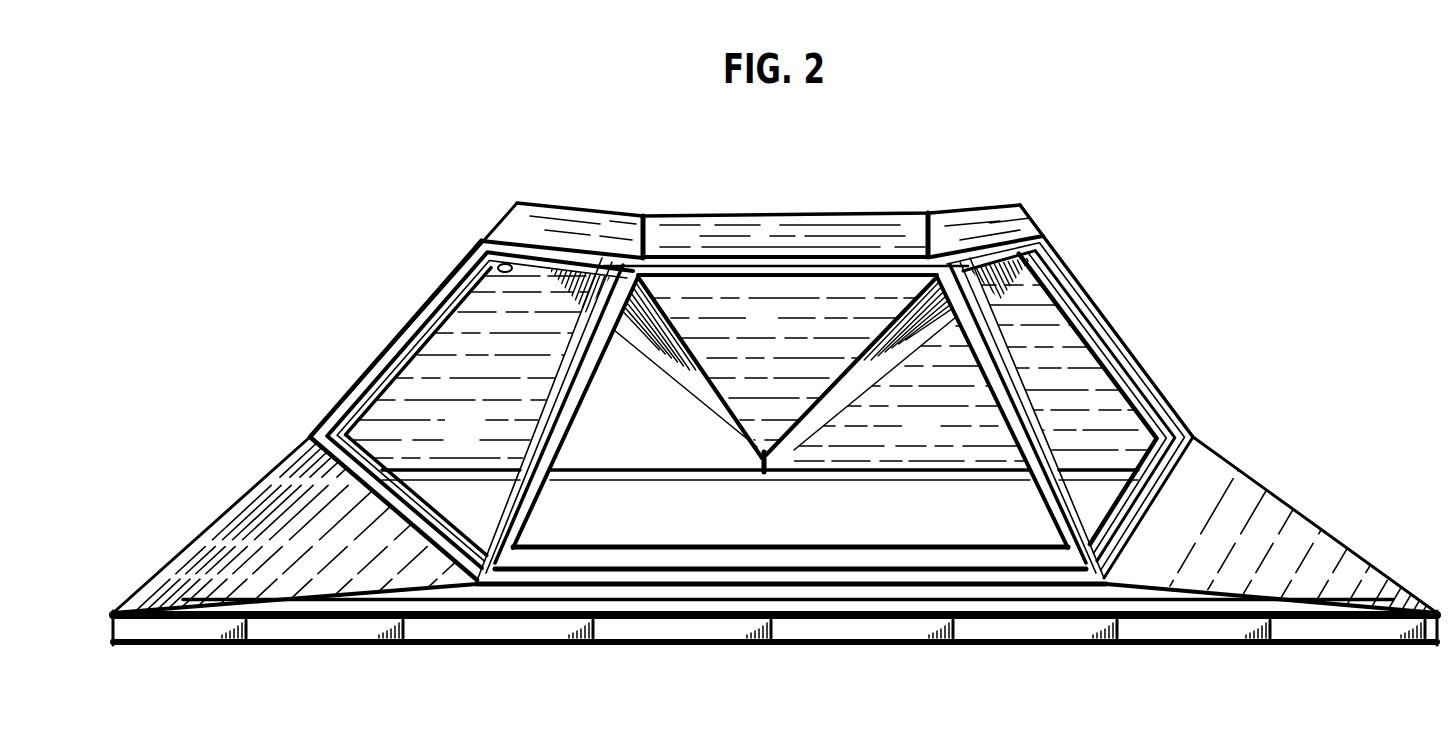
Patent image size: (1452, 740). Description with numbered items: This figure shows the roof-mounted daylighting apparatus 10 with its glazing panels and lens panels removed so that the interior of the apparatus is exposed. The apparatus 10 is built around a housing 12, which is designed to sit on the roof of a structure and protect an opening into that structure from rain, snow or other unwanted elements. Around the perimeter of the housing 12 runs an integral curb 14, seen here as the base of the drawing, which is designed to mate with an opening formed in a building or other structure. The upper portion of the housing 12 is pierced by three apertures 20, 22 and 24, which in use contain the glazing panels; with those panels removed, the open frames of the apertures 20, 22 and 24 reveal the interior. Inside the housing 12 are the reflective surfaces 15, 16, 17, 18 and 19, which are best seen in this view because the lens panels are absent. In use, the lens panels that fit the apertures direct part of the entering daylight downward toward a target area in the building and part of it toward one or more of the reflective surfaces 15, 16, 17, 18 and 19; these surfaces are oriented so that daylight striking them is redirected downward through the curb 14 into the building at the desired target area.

The apparatus 10 is at (1152, 228).
The housing 12 is at (281, 482).
The curb 14 is at (115, 613).
The reflective surface 15 is at (476, 442).
The reflective surface 16 is at (663, 370).
The reflective surface 17 is at (775, 329).
The reflective surface 18 is at (889, 350).
The reflective surface 19 is at (938, 442).
The aperture 20 is at (808, 282).
The aperture 22 is at (497, 265).
The aperture 24 is at (1073, 313).